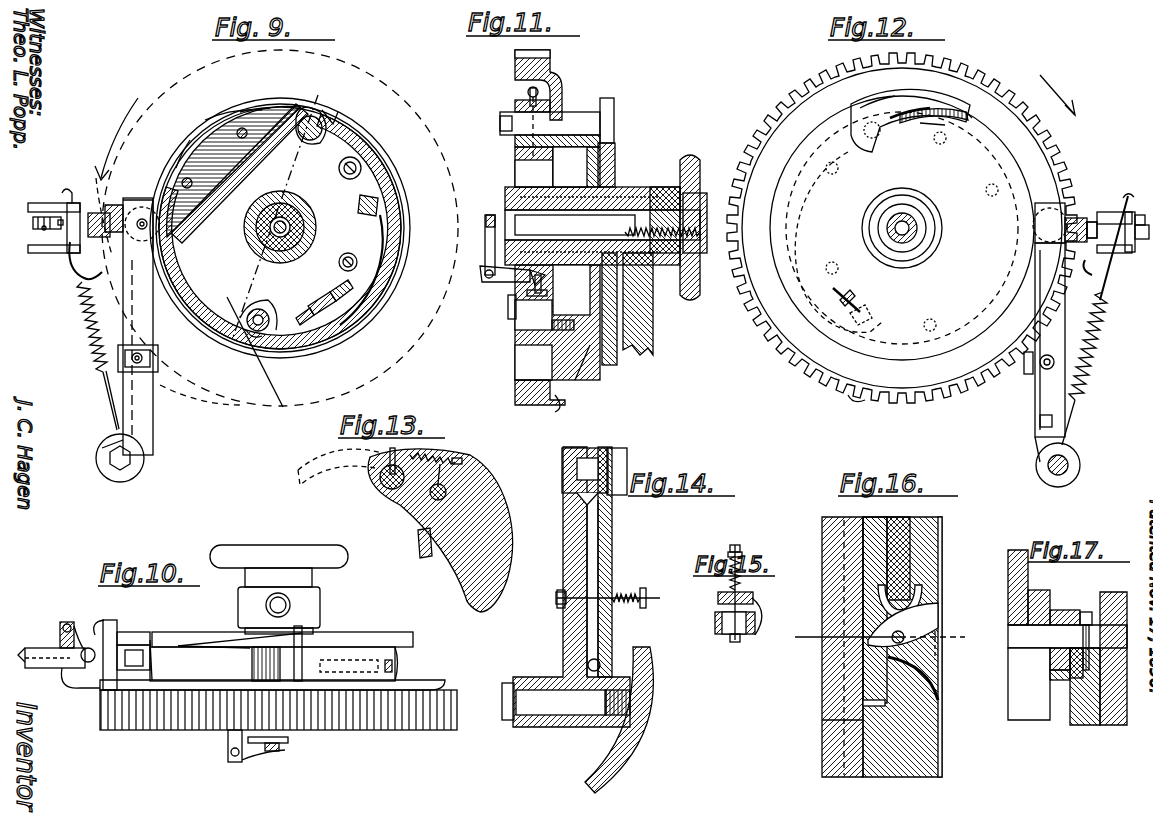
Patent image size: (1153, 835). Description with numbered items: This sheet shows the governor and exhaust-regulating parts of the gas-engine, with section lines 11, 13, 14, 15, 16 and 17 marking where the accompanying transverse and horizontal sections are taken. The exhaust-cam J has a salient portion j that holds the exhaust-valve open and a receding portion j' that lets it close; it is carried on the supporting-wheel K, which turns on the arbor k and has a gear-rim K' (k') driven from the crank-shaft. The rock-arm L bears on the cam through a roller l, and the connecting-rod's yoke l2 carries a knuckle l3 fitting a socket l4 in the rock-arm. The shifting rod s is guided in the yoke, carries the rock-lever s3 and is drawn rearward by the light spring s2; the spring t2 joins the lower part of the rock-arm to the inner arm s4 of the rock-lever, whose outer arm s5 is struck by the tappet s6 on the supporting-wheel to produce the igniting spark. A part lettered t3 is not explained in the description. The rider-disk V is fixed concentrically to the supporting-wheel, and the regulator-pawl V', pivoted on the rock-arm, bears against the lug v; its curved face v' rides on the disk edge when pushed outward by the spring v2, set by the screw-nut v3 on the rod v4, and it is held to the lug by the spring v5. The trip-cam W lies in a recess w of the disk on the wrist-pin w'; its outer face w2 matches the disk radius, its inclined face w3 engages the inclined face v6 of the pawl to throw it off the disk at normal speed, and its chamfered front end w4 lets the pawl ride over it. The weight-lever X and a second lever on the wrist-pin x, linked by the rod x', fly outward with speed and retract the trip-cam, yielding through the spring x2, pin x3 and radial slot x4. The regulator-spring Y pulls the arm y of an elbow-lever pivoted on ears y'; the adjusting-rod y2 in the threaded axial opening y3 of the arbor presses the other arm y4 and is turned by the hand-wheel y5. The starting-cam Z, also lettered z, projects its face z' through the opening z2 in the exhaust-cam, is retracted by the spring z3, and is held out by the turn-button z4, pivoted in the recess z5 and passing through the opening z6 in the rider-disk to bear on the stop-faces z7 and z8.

In FIG. 9, the rider-disk V is at (286, 228).
In FIG. 10, the rider-disk V is at (282, 621).
In FIG. 11, the rider-disk V is at (627, 327).
In FIG. 12, the rider-disk V is at (902, 228).
In FIG. 14, the rider-disk V is at (619, 720).
In FIG. 16, the rider-disk V is at (924, 558).
In FIG. 17, the rider-disk V is at (1098, 682).
In FIG. 14, the regulator pawl V' is at (613, 562).
In FIG. 10, the lug v is at (95, 616).
In FIG. 12, the lug v is at (1052, 247).
In FIG. 14, the lug v is at (629, 470).
In FIG. 10, the curved face v' is at (144, 623).
In FIG. 12, the curved face v' is at (1032, 252).
In FIG. 14, the spring v2 is at (626, 583).
In FIG. 15, the spring v2 is at (728, 578).
In FIG. 12, the screw-nut v3 is at (1047, 373).
In FIG. 14, the screw-nut v3 is at (652, 586).
In FIG. 15, the screw-nut v3 is at (742, 556).
In FIG. 14, the rod v4 is at (560, 608).
In FIG. 15, the rod v4 is at (735, 642).
In FIG. 9, the spring v5 is at (158, 366).
In FIG. 12, the spring v5 is at (1028, 374).
In FIG. 15, the spring v5 is at (750, 613).
In FIG. 10, the inclined face v6 is at (150, 632).
In FIG. 14, the inclined face v6 is at (603, 452).
In FIG. 9, the trip-cam W is at (285, 110).
In FIG. 11, the trip-cam W is at (614, 104).
In FIG. 12, the trip-cam W is at (904, 104).
In FIG. 9, the recess w is at (341, 107).
In FIG. 10, the recess w is at (317, 642).
In FIG. 11, the recess w is at (621, 165).
In FIG. 12, the recess w is at (932, 138).
In FIG. 9, the wrist-pin w' is at (307, 126).
In FIG. 11, the wrist-pin w' is at (550, 129).
In FIG. 13, the wrist-pin w' is at (365, 483).
In FIG. 9, the outer curved face w2 is at (250, 112).
In FIG. 10, the outer curved face w2 is at (280, 664).
In FIG. 12, the outer curved face w2 is at (878, 106).
In FIG. 10, the inclined face w3 is at (230, 640).
In FIG. 12, the inclined face w3 is at (929, 107).
In FIG. 9, the chamfer w4 is at (212, 118).
In FIG. 12, the chamfer w4 is at (972, 112).
In FIG. 11, the centrifugal weight-lever X is at (514, 151).
In FIG. 13, the centrifugal weight-lever X is at (440, 530).
In FIG. 9, the wrist-pin x is at (250, 306).
In FIG. 11, the wrist-pin x is at (557, 322).
In FIG. 10, the rod x' is at (400, 517).
In FIG. 11, the rod x' is at (501, 330).
In FIG. 13, the rod x' is at (415, 543).
In FIG. 13, the spring x2 is at (436, 464).
In FIG. 11, the screw or pin x3 is at (528, 92).
In FIG. 13, the screw or pin x3 is at (401, 451).
In FIG. 13, the radial slot x4 is at (340, 462).
In FIG. 11, the regulator-spring Y is at (527, 293).
In FIG. 11, the arm of elbow-lever y is at (502, 290).
In FIG. 10, the ears y' is at (213, 746).
In FIG. 11, the ears y' is at (492, 278).
In FIG. 9, the screw-adjusting rod y2 is at (252, 218).
In FIG. 10, the screw-adjusting rod y2 is at (280, 545).
In FIG. 11, the screw-adjusting rod y2 is at (555, 225).
In FIG. 12, the screw-adjusting rod y2 is at (910, 222).
In FIG. 11, the screw-threaded opening y3 is at (665, 190).
In FIG. 10, the arm of elbow-lever y4 is at (262, 752).
In FIG. 11, the arm of elbow-lever y4 is at (485, 225).
In FIG. 10, the hand-wheel y5 is at (279, 566).
In FIG. 11, the hand-wheel y5 is at (690, 158).
In FIG. 16, the starting-cam Z is at (870, 670).
In FIG. 9, the starting-cam z is at (353, 253).
In FIG. 9, the face of starting-cam z' is at (383, 270).
In FIG. 10, the face of starting-cam z' is at (406, 664).
In FIG. 17, the face of starting-cam z' is at (1039, 607).
In FIG. 9, the opening z2 is at (392, 238).
In FIG. 10, the opening z2 is at (349, 668).
In FIG. 16, the opening z2 is at (840, 725).
In FIG. 17, the opening z2 is at (1038, 659).
In FIG. 9, the spring z3 is at (359, 205).
In FIG. 9, the turn-button z4 is at (322, 298).
In FIG. 12, the turn-button z4 is at (854, 300).
In FIG. 16, the turn-button z4 is at (928, 635).
In FIG. 17, the turn-button z4 is at (1072, 680).
In FIG. 16, the recess z5 is at (922, 600).
In FIG. 12, the opening z6 is at (870, 310).
In FIG. 16, the opening z6 is at (930, 670).
In FIG. 9, the stop-face z7 is at (304, 311).
In FIG. 17, the stop-face z7 is at (1050, 675).
In FIG. 9, the stop-face z8 is at (341, 290).
In FIG. 17, the stop-face z8 is at (1086, 612).
In FIG. 10, the supporting-wheel K is at (275, 707).
In FIG. 11, the supporting-wheel K is at (518, 375).
In FIG. 12, the supporting-wheel K is at (892, 228).
In FIG. 16, the supporting-wheel K is at (826, 647).
In FIG. 17, the supporting-wheel K is at (1063, 645).
In FIG. 10, the gear-rim K' is at (278, 727).
In FIG. 12, the gear-rim K' is at (902, 228).
In FIG. 9, the arbor k is at (266, 227).
In FIG. 11, the arbor k is at (585, 213).
In FIG. 12, the arbor k is at (876, 228).
In FIG. 11, the gear-rim k' is at (550, 75).
In FIG. 9, the exhaust-cam J is at (263, 112).
In FIG. 11, the exhaust-cam J is at (547, 99).
In FIG. 16, the exhaust-cam J is at (902, 658).
In FIG. 17, the exhaust-cam J is at (1062, 610).
In FIG. 9, the salient portion j is at (176, 143).
In FIG. 10, the salient portion j is at (272, 664).
In FIG. 9, the receding portion j' is at (240, 347).
In FIG. 10, the receding portion j' is at (415, 656).
In FIG. 11, the receding portion j' is at (582, 362).
In FIG. 9, the rock-arm L is at (140, 420).
In FIG. 10, the rock-arm L is at (103, 630).
In FIG. 12, the rock-arm L is at (1035, 428).
In FIG. 14, the rock-arm L is at (563, 534).
In FIG. 15, the rock-arm L is at (715, 624).
In FIG. 9, the roller l is at (160, 236).
In FIG. 10, the roller l is at (133, 657).
In FIG. 14, the roller l is at (584, 458).
In FIG. 12, the yoke l2 is at (1134, 258).
In FIG. 9, the knuckle l3 is at (104, 211).
In FIG. 10, the knuckle l3 is at (78, 636).
In FIG. 12, the knuckle l3 is at (1110, 212).
In FIG. 9, the socket l4 is at (112, 204).
In FIG. 10, the socket l4 is at (88, 648).
In FIG. 12, the socket l4 is at (1092, 220).
In FIG. 9, the shifting rod s is at (33, 222).
In FIG. 10, the shifting rod s is at (45, 668).
In FIG. 12, the shifting rod s is at (1146, 224).
In FIG. 9, the light spring s2 is at (42, 230).
In FIG. 9, the rock-lever s3 is at (58, 224).
In FIG. 9, the inner arm s4 is at (60, 187).
In FIG. 10, the inner arm s4 is at (57, 628).
In FIG. 12, the inner arm s4 is at (1120, 233).
In FIG. 9, the outer arm s5 is at (72, 262).
In FIG. 10, the outer arm s5 is at (79, 685).
In FIG. 12, the outer arm s5 is at (1086, 264).
In FIG. 9, the tappet s6 is at (252, 402).
In FIG. 11, the tappet s6 is at (566, 408).
In FIG. 12, the tappet s6 is at (863, 404).
In FIG. 9, the spring t2 is at (84, 322).
In FIG. 10, the spring t2 is at (44, 621).
In FIG. 12, the spring t2 is at (1084, 368).
In FIG. 9, the block t3 is at (96, 212).
In FIG. 9, the section line 11 11 is at (318, 102).
In FIG. 11, the section line 13 13 is at (525, 80).
In FIG. 9, the section line 14 14 is at (142, 210).
In FIG. 14, the section line 15 15 is at (555, 598).
In FIG. 12, the section line 16 16 is at (830, 290).
In FIG. 16, the section line 17 17 is at (886, 635).